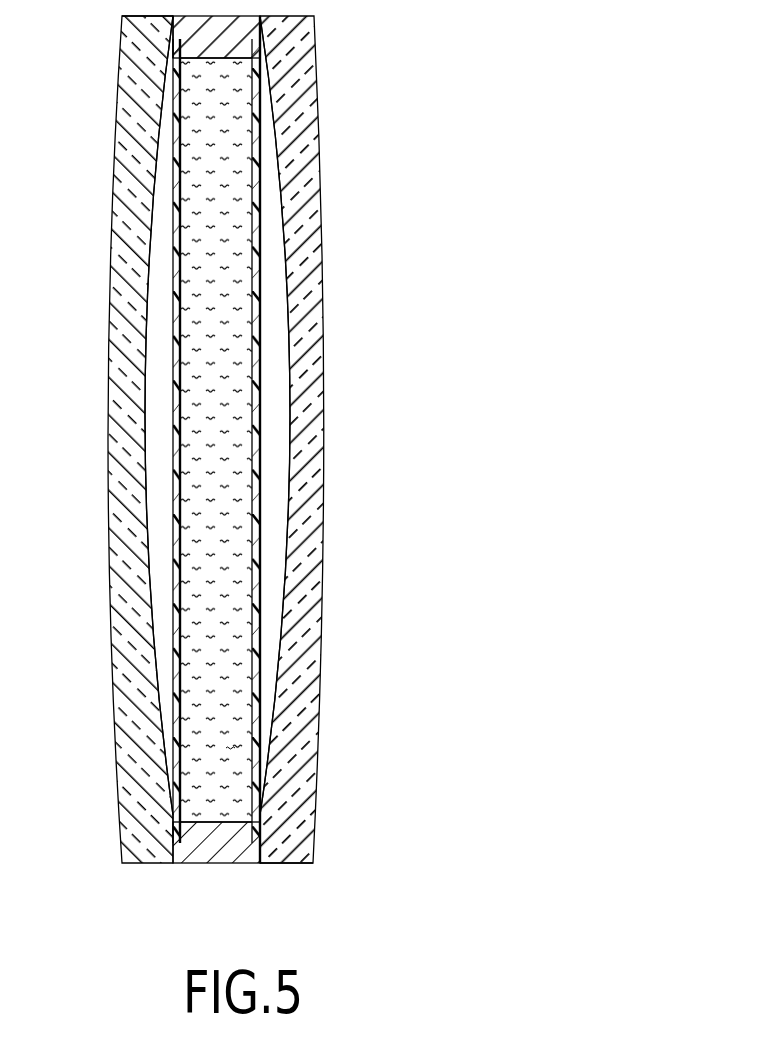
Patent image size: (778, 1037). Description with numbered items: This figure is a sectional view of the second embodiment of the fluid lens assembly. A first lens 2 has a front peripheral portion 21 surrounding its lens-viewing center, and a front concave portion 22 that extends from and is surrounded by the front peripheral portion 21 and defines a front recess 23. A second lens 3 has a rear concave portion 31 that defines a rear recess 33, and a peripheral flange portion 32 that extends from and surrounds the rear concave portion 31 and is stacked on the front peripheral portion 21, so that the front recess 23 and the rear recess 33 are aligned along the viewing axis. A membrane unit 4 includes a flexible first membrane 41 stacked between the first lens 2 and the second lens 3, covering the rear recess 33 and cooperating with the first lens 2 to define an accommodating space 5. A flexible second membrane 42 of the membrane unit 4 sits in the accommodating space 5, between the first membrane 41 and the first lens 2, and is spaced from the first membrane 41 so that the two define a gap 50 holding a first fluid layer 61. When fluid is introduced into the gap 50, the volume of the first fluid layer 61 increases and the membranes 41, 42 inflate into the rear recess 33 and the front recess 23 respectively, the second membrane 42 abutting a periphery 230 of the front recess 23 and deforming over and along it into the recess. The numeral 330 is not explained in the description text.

The first lens 2 is at (99, 439).
The front peripheral portion 21 is at (133, 33).
The front concave portion 22 is at (137, 533).
The front recess 23 is at (147, 456).
The periphery of the front recess 230 is at (171, 58).
The second lens 3 is at (346, 439).
The rear concave portion 31 is at (315, 610).
The peripheral flange portion 32 is at (300, 843).
The rear recess 33 is at (278, 467).
The opening of gap 330 is at (262, 819).
The membrane unit 4 is at (300, 439).
The first membrane 41 is at (256, 205).
The second membrane 42 is at (178, 176).
The accommodating space 5 is at (300, 439).
The gap 50 is at (238, 316).
The first fluid layer 61 is at (233, 746).